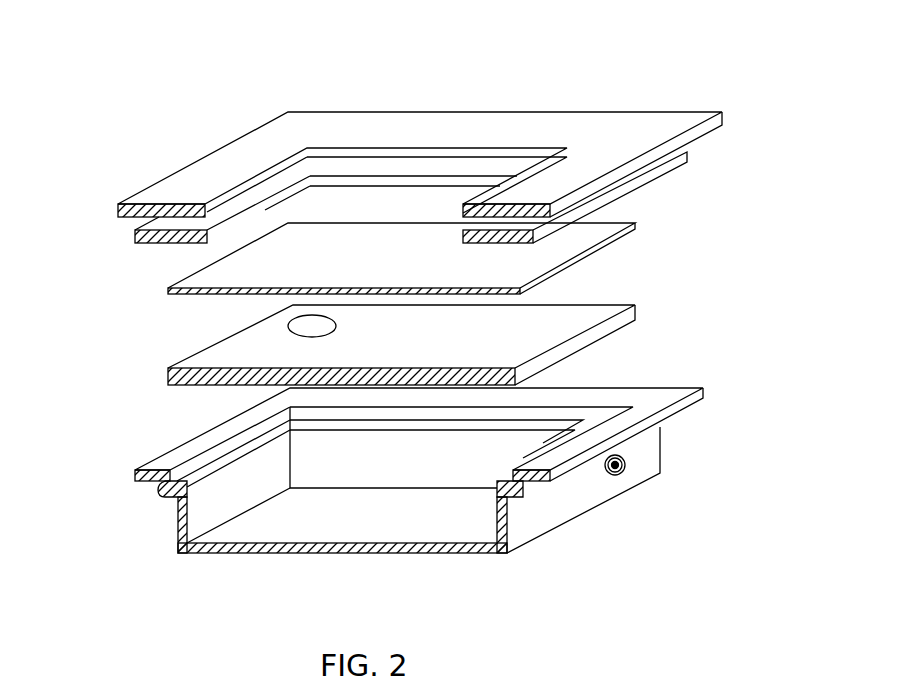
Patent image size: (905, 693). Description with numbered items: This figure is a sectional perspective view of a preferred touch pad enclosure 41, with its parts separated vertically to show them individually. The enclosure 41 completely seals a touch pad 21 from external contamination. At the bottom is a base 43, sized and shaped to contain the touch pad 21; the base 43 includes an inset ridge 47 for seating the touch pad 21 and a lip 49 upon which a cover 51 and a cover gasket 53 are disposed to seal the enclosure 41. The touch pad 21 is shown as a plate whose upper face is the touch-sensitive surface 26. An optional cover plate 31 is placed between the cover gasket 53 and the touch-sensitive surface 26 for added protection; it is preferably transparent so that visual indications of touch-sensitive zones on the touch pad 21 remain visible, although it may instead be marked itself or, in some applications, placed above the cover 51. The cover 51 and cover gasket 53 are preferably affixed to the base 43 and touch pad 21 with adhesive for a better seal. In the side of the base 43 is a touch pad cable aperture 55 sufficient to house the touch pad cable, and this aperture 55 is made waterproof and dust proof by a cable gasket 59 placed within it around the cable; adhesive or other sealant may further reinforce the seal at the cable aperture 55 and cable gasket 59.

The touch pad enclosure 41 is at (690, 92).
The cover 51 is at (223, 157).
The cover gasket 53 is at (178, 223).
The cover plate 31 is at (215, 274).
The touch pad 21 is at (145, 373).
The touch-sensitive surface 26 is at (430, 348).
The lip 49 is at (185, 452).
The inset ridge 47 is at (170, 492).
The base 43 is at (533, 517).
The cable gasket 59 is at (624, 460).
The touch pad cable aperture 55 is at (618, 473).